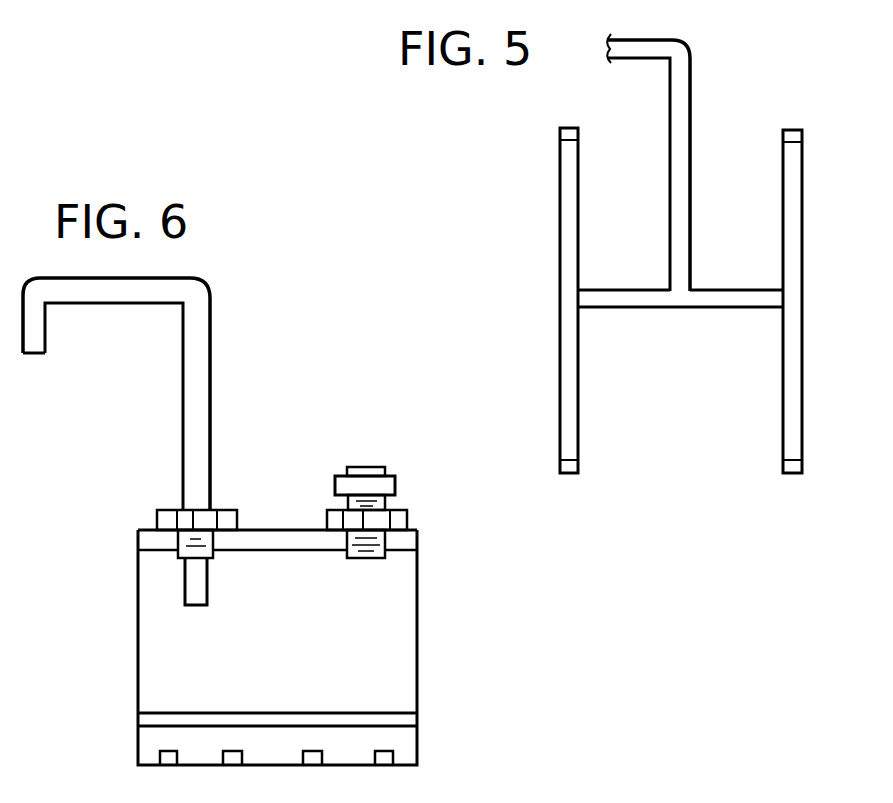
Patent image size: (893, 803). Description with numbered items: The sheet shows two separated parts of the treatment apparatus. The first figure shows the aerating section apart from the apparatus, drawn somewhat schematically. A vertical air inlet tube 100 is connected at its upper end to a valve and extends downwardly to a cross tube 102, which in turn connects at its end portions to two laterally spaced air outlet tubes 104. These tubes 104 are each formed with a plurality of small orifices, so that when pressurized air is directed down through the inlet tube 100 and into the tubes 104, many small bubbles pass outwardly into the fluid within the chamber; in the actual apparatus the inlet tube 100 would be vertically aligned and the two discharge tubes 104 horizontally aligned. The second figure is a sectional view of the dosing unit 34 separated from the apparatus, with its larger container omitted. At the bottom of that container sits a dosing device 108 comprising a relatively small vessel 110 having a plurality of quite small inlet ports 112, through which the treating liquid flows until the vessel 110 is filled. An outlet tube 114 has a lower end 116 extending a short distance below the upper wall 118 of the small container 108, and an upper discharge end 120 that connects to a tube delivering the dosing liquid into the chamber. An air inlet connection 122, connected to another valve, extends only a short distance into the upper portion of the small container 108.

In FIG. 6, the dosing unit 34 is at (275, 442).
In FIG. 5, the vertical air inlet tube 100 is at (686, 108).
In FIG. 5, the cross tube 102 is at (637, 298).
In FIG. 5, the air outlet tubes 104 is at (566, 200).
In FIG. 6, the dosing device 108 is at (150, 638).
In FIG. 6, the vessel 110 is at (150, 660).
In FIG. 6, the inlet ports 112 is at (160, 757).
In FIG. 6, the outlet tube 114 is at (190, 437).
In FIG. 6, the lower end 116 is at (190, 586).
In FIG. 6, the upper wall 118 is at (258, 532).
In FIG. 6, the upper discharge end 120 is at (37, 333).
In FIG. 6, the air inlet connection 122 is at (410, 508).